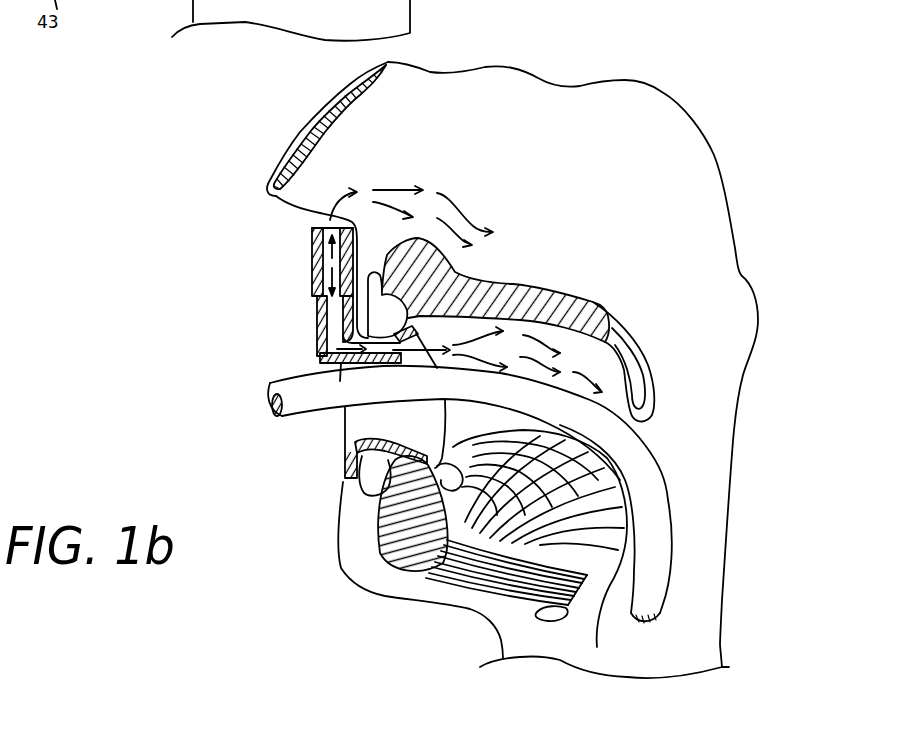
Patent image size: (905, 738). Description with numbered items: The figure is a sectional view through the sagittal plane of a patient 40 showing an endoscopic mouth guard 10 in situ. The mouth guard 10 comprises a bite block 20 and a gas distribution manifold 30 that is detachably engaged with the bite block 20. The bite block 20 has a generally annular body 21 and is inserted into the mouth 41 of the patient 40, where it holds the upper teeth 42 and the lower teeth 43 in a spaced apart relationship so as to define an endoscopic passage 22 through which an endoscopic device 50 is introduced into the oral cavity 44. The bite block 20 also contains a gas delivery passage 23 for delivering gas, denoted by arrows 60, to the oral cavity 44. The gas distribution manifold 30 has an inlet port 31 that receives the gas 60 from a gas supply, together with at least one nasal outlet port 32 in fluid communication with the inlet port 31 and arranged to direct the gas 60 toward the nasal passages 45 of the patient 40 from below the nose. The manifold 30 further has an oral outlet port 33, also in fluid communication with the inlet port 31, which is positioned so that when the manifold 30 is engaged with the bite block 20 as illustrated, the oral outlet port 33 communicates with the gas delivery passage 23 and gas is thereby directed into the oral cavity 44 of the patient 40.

The endoscopic mouth guard 10 is at (291, 314).
The bite block 20 is at (338, 438).
The generally annular body 21 is at (380, 425).
The endoscopic passage 22 is at (360, 418).
The gas delivery passage 23 is at (316, 351).
The gas distribution manifold 30 is at (306, 234).
The inlet port 31 is at (328, 265).
The nasal outlet port 32 is at (306, 231).
The oral outlet port 33 is at (316, 296).
The patient 40 is at (583, 70).
The mouth 41 is at (343, 492).
The upper teeth 42 is at (398, 312).
The lower teeth 43 is at (412, 487).
The oral cavity 44 is at (500, 347).
The nasal passages 45 is at (343, 182).
The endoscopic device 50 is at (299, 394).
The gas 60 is at (399, 189).